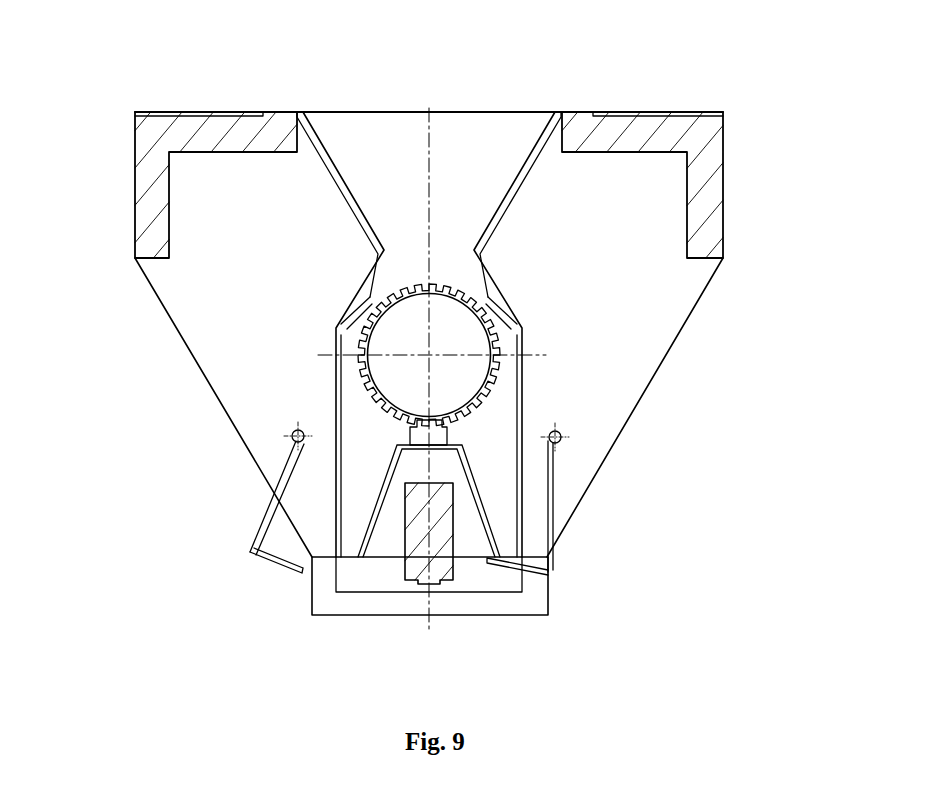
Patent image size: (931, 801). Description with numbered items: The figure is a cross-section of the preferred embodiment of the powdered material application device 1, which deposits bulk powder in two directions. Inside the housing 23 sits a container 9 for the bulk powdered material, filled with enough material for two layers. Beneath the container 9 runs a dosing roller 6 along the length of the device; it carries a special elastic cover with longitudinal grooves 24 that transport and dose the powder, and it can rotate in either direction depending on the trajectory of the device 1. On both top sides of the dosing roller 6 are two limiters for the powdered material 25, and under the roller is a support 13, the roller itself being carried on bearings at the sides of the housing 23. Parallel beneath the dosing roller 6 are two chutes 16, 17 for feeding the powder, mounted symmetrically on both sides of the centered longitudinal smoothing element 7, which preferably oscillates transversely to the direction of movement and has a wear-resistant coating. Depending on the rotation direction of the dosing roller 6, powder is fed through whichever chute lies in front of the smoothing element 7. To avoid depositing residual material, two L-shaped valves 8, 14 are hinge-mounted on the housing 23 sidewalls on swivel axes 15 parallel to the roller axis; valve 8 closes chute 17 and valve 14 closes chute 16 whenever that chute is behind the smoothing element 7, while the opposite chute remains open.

The powdered material application device 1 is at (253, 393).
The dosing roller 6 is at (375, 302).
The smoothing element 7 is at (423, 552).
The valve 8 is at (550, 515).
The container 9 is at (448, 190).
The support 13 is at (440, 435).
The valve 14 is at (273, 560).
The swivel axes 15 is at (298, 436).
The chute 16 is at (352, 559).
The chute 17 is at (508, 560).
The housing 23 is at (593, 133).
The longitudinal grooves 24 is at (402, 327).
The limiters for the powdered material 25 is at (356, 320).